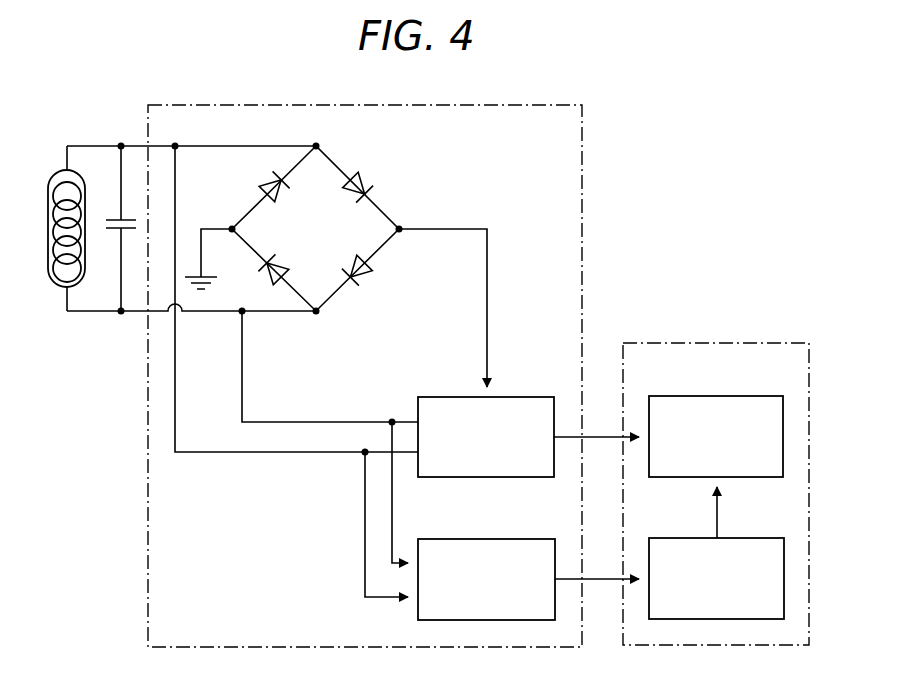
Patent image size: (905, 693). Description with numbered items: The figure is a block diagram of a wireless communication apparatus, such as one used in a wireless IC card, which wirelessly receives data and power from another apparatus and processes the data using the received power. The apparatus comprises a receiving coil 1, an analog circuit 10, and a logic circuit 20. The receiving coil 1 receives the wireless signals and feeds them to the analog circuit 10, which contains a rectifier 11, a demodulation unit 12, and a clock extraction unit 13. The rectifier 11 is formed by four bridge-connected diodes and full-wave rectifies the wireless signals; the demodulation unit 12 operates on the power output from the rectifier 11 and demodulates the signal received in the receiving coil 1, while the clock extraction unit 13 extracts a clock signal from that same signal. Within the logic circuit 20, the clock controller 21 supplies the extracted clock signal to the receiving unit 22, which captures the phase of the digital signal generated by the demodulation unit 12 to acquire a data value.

The receiving coil 1 is at (42, 280).
The analog circuit 10 is at (582, 141).
The rectifier 11 is at (377, 167).
The demodulation unit 12 is at (520, 397).
The clock extraction unit 13 is at (483, 539).
The logic circuit 20 is at (717, 343).
The clock controller 21 is at (737, 538).
The receiving unit 22 is at (695, 396).